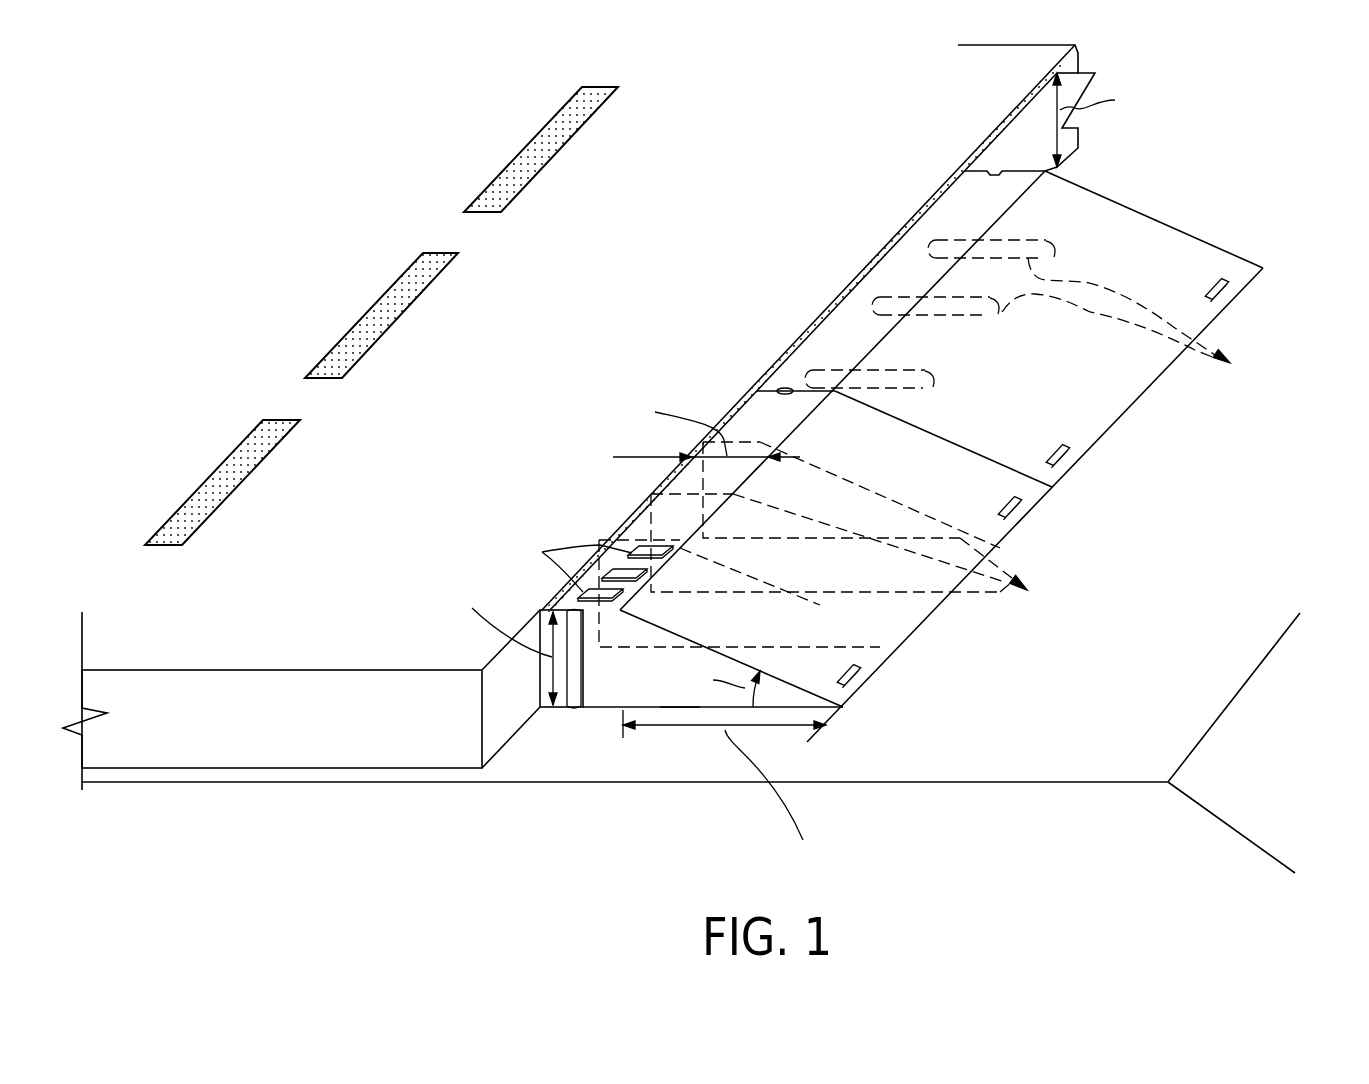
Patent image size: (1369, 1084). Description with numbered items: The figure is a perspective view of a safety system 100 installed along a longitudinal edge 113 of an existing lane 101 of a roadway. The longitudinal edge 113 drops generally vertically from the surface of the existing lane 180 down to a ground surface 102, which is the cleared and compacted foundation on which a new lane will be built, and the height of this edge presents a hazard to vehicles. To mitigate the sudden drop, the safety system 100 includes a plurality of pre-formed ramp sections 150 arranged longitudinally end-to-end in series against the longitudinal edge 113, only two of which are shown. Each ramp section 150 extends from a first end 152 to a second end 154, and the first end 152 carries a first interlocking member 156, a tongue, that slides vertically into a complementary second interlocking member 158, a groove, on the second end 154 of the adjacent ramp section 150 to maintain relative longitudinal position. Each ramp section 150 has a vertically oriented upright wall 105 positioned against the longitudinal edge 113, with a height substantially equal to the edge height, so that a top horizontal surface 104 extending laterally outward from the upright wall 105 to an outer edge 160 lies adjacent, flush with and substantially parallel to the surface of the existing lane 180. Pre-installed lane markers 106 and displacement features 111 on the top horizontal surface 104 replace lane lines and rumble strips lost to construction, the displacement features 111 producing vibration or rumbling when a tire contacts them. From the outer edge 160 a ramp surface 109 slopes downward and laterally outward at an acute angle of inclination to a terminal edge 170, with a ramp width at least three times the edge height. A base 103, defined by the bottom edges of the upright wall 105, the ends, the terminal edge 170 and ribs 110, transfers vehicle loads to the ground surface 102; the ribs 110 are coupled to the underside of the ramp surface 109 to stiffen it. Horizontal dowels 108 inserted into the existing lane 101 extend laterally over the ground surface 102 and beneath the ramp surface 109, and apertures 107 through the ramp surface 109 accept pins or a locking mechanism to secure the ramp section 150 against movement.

The safety system 100 is at (1248, 206).
The existing lane 101 is at (505, 318).
The ground surface 102 is at (1135, 660).
The base 103 is at (608, 708).
The top horizontal surface 104 is at (756, 405).
The upright wall 105 is at (503, 705).
The lane marker 106 is at (638, 515).
The aperture 107 is at (1023, 515).
The horizontal dowels 108 is at (1041, 317).
The ramp surface 109 is at (770, 612).
The rib 110 is at (856, 533).
The displacement feature 111 is at (566, 554).
The longitudinal edge 113 is at (505, 735).
The ramp section 150 is at (1222, 415).
The first end 152 is at (617, 657).
The second end 154 is at (987, 447).
The first interlocking member 156 is at (667, 712).
The second interlocking member 158 is at (775, 355).
The outer edge 160 is at (800, 428).
The terminal edge 170 is at (905, 612).
The surface of the existing lane 180 is at (410, 564).